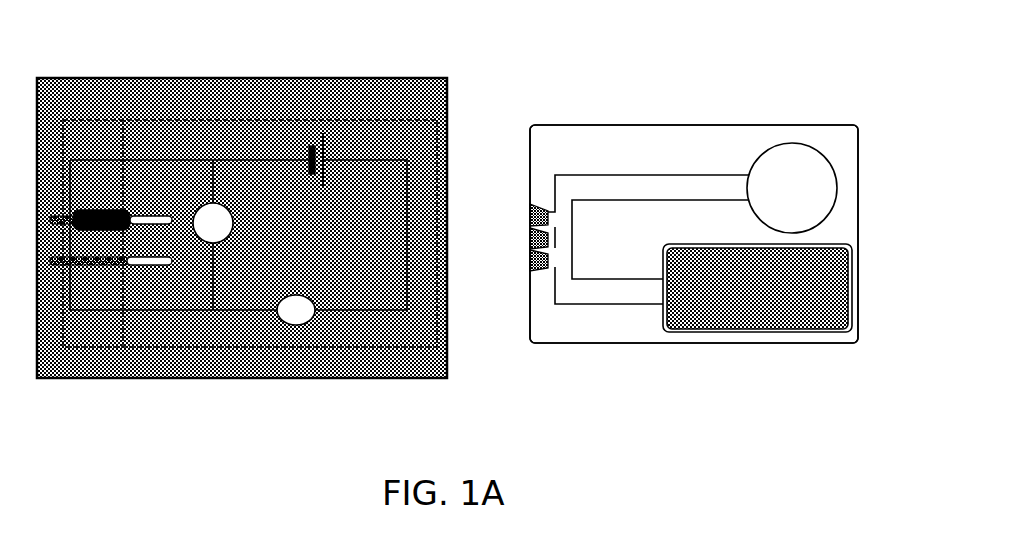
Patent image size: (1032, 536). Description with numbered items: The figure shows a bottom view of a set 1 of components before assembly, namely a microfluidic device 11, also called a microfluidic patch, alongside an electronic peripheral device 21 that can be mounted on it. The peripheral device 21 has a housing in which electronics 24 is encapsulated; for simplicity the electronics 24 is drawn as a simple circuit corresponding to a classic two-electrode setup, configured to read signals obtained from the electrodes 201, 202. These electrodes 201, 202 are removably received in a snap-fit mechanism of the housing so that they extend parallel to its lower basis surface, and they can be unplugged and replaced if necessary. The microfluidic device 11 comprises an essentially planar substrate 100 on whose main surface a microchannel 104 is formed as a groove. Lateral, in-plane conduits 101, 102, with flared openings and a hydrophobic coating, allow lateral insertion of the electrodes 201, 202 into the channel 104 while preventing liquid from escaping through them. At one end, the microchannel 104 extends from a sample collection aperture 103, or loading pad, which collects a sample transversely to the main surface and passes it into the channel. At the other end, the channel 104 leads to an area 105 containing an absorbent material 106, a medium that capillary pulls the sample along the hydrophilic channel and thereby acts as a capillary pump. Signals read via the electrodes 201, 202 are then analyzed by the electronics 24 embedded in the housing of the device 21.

The set of components 1 is at (712, 263).
The microfluidic device 11 is at (858, 303).
The electronic peripheral device 21 is at (213, 380).
The electronics 24 is at (350, 311).
The substrate 100 is at (677, 124).
The conduit 101 is at (550, 207).
The conduit 102 is at (545, 271).
The sample collection aperture 103 is at (787, 142).
The microchannel 104 is at (605, 180).
The area 105 is at (827, 245).
The absorbent material 106 is at (837, 277).
The electrode 201 is at (98, 206).
The electrode 202 is at (87, 266).